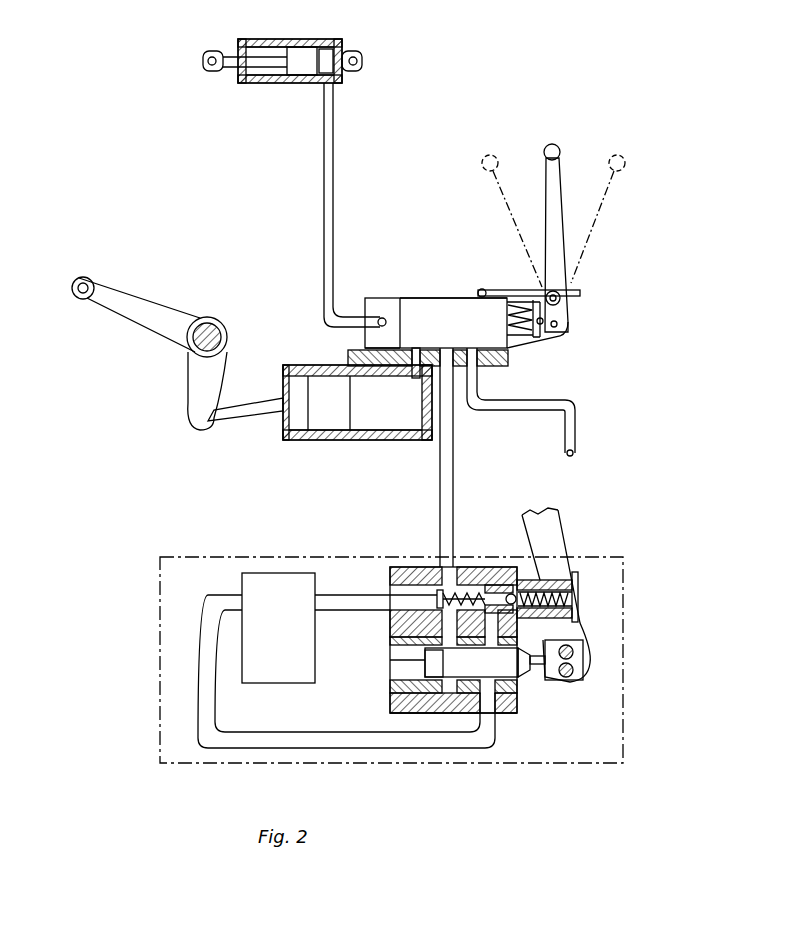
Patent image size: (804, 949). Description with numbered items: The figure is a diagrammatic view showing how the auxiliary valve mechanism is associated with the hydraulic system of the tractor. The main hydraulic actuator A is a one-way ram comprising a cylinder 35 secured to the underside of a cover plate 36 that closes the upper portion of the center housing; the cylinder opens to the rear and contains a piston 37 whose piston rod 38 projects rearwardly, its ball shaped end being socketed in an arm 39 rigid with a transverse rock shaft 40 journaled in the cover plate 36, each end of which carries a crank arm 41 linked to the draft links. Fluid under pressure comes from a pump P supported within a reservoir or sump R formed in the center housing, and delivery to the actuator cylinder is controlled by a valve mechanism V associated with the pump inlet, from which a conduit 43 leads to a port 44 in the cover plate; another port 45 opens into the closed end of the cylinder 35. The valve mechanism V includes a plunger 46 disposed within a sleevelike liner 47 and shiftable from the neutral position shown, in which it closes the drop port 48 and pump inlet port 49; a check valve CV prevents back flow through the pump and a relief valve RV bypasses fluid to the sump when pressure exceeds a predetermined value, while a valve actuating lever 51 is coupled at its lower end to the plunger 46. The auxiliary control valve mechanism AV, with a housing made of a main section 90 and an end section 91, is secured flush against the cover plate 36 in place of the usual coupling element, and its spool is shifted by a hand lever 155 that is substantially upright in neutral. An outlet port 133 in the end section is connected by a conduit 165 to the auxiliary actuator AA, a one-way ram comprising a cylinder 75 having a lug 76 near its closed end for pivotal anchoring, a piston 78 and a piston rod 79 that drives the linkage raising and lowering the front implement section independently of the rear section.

The piston rod 79 is at (220, 58).
The piston 78 is at (300, 55).
The auxiliary actuator AA is at (337, 30).
The lug 76 is at (358, 70).
The cylinder 75 is at (290, 83).
The conduit 165 is at (333, 192).
The hand lever 155 is at (556, 148).
The crank arm 41 is at (160, 290).
The rock shaft 40 is at (222, 322).
The arm 39 is at (195, 390).
The piston rod 38 is at (238, 420).
The cover plate 36 is at (350, 352).
The piston 37 is at (345, 430).
The cylinder 35 is at (388, 438).
The hydraulic actuator A is at (296, 446).
The end section 91 is at (380, 300).
The outlet port 133 is at (386, 320).
The auxiliary control valve mechanism AV is at (436, 296).
The main section 90 is at (460, 310).
The port 45 is at (418, 352).
The port 44 is at (452, 355).
The conduit 43 is at (454, 490).
The check valve CV is at (428, 585).
The relief valve RV is at (523, 573).
The valve actuating lever 51 is at (555, 547).
The pump P is at (270, 565).
The valve mechanism V is at (388, 571).
The reservoir or sump R is at (158, 620).
The sleevelike liner 47 is at (400, 662).
The plunger 46 is at (520, 664).
The drop port 48 is at (495, 712).
The pump inlet port 49 is at (447, 714).